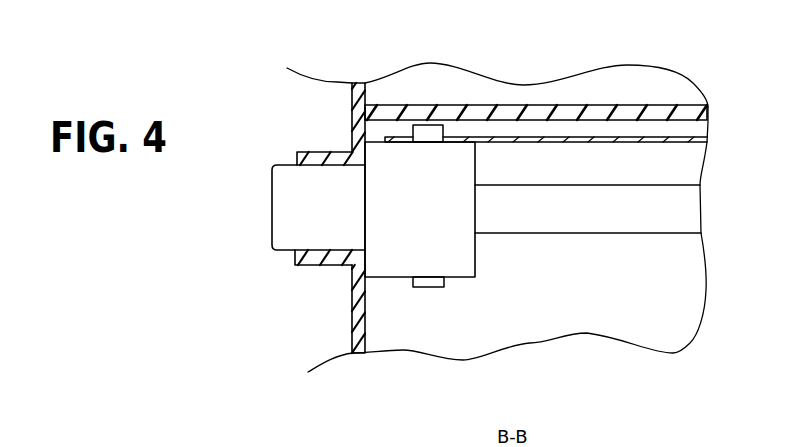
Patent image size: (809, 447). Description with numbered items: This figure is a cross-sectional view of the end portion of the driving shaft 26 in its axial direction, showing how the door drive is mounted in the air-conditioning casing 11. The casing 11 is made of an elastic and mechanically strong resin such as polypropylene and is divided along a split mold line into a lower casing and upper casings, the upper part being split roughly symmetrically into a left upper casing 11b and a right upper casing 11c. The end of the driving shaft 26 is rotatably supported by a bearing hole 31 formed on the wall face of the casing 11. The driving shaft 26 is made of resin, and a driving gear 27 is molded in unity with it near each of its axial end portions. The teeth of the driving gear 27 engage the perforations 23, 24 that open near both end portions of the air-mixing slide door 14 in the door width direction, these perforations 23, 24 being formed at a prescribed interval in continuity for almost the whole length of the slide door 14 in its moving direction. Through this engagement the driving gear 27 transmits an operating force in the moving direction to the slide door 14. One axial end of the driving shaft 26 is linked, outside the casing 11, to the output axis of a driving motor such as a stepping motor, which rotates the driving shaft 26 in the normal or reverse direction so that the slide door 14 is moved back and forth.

The casing 11 is at (315, 251).
The left upper casing 11b is at (358, 218).
The right upper casing 11c is at (352, 292).
The air-mixing slide door 14 is at (687, 137).
The perforation 23 is at (546, 85).
The perforation 24 is at (453, 136).
The driving shaft 26 is at (690, 225).
The driving gear 27 is at (422, 132).
The bearing hole 31 is at (313, 155).